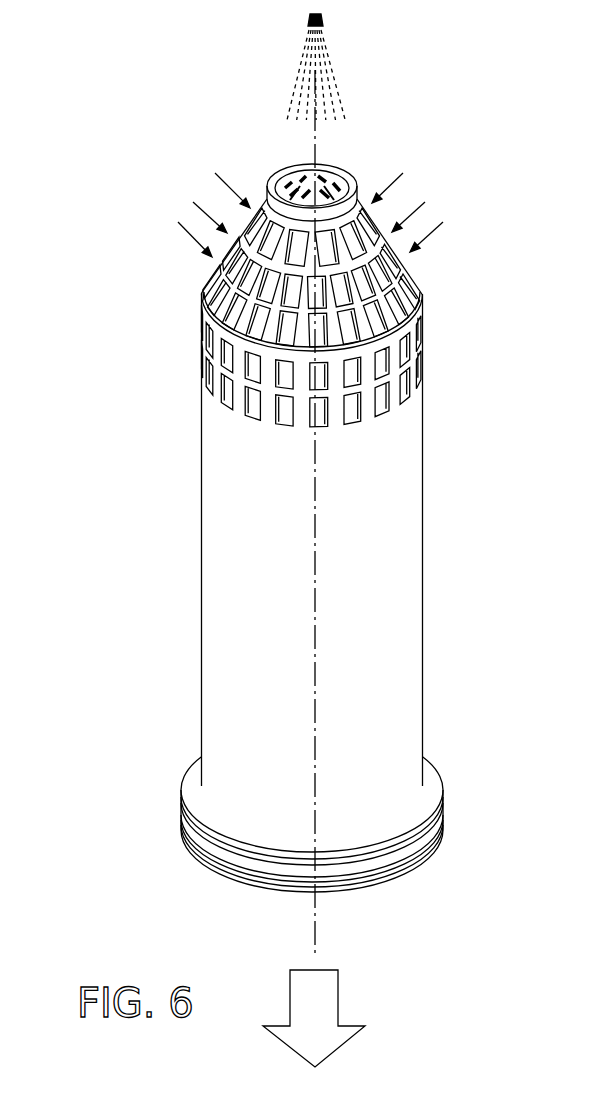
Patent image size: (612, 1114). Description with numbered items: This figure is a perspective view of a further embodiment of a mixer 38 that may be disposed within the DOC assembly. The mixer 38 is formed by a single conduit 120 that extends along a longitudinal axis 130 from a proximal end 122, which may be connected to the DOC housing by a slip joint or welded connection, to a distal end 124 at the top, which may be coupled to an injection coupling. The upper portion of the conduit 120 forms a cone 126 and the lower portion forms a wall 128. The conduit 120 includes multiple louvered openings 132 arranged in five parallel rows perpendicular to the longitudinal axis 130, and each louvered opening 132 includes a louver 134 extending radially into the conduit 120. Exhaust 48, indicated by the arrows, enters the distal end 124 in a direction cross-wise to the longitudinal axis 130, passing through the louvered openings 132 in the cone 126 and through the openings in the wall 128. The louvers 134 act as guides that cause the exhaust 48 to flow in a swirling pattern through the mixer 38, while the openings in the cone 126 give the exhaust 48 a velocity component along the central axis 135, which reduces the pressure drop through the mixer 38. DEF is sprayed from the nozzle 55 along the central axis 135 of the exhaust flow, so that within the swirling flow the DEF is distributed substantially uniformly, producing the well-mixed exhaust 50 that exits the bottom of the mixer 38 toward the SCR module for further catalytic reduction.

The mixer 38 is at (104, 529).
The exhaust 48 is at (213, 215).
The well-mixed exhaust 50 is at (327, 1021).
The spray nozzle 55 is at (333, 67).
The conduit 120 is at (422, 660).
The proximal end 122 is at (420, 845).
The distal end 124 is at (353, 167).
The cone 126 is at (423, 297).
The wall 128 is at (420, 502).
The longitudinal axis 130 is at (320, 937).
The louvered openings 132 is at (398, 399).
The louver 134 is at (329, 186).
The central axis 135 is at (319, 573).